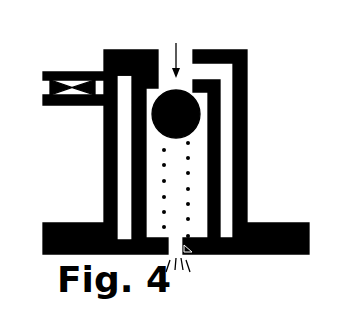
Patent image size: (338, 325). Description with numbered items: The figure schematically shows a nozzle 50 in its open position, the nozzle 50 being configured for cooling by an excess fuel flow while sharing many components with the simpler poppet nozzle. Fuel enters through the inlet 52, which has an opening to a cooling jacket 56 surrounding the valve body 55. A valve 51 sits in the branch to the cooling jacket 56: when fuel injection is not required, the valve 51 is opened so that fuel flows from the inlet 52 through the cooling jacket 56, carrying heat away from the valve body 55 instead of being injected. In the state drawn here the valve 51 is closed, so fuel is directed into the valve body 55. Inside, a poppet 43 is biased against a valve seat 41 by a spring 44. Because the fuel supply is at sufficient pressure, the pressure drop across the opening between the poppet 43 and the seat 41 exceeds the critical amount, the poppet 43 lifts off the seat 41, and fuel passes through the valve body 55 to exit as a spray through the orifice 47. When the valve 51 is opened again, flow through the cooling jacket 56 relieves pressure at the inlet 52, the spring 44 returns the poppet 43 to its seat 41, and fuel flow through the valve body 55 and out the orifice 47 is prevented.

The nozzle 50 is at (82, 58).
The valve 51 is at (72, 83).
The valve seat 41 is at (156, 88).
The inlet 52 is at (168, 57).
The poppet 43 is at (178, 90).
The spring 44 is at (190, 158).
The valve body 55 is at (210, 165).
The cooling jacket 56 is at (227, 181).
The orifice 47 is at (193, 254).